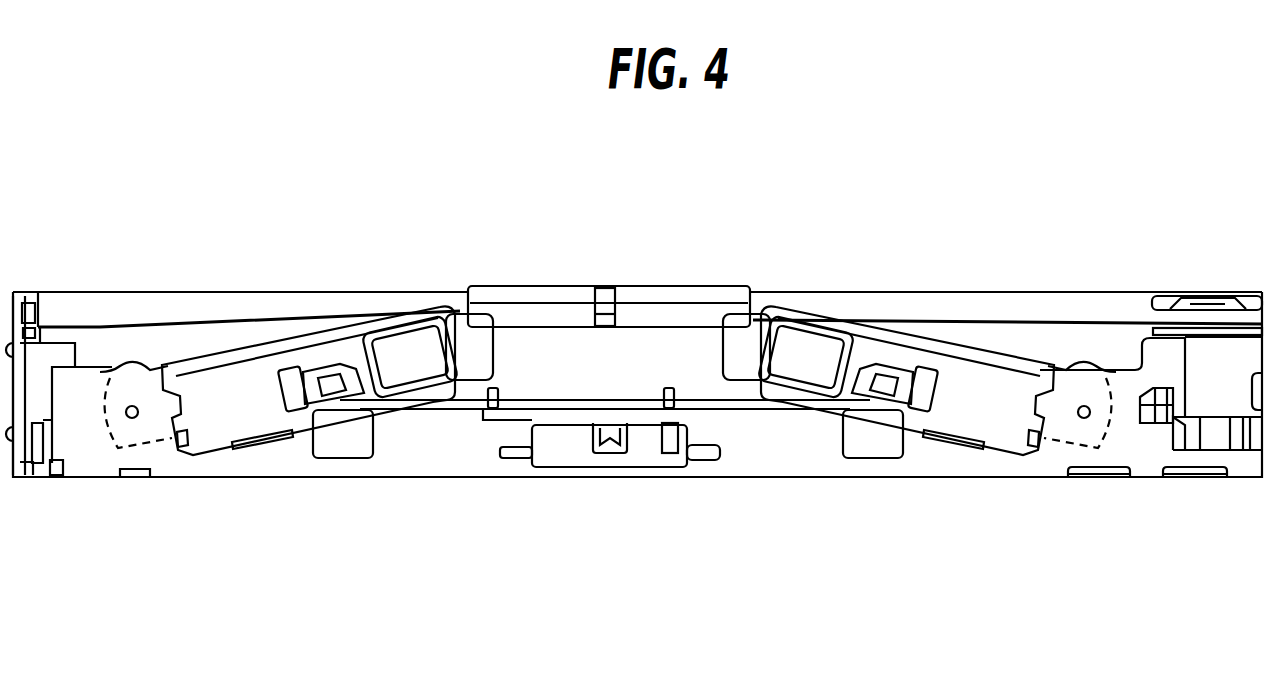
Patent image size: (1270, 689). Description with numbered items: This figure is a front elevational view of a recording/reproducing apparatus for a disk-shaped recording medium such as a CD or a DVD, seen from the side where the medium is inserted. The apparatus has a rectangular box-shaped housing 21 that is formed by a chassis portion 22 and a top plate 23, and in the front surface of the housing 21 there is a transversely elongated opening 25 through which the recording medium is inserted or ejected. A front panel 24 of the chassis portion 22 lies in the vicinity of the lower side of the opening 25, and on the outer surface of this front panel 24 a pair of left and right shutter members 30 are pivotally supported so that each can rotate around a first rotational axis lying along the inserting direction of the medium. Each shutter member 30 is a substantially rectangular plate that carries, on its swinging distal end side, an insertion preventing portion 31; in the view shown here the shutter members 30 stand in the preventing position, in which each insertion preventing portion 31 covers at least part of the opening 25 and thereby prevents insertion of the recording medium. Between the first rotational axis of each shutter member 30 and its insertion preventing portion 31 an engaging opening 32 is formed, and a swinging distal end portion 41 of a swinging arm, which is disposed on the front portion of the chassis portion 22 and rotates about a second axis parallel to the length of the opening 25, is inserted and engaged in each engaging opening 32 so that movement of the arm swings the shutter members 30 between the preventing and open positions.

The housing 21 is at (1142, 287).
The chassis portion 22 is at (1052, 490).
The top plate 23 is at (107, 290).
The front panel 24 is at (103, 449).
The opening 25 is at (638, 352).
The shutter member 30 is at (240, 380).
The insertion preventing portion 31 is at (478, 352).
The engaging opening 32 is at (305, 425).
The swinging distal end portion 41 is at (343, 372).